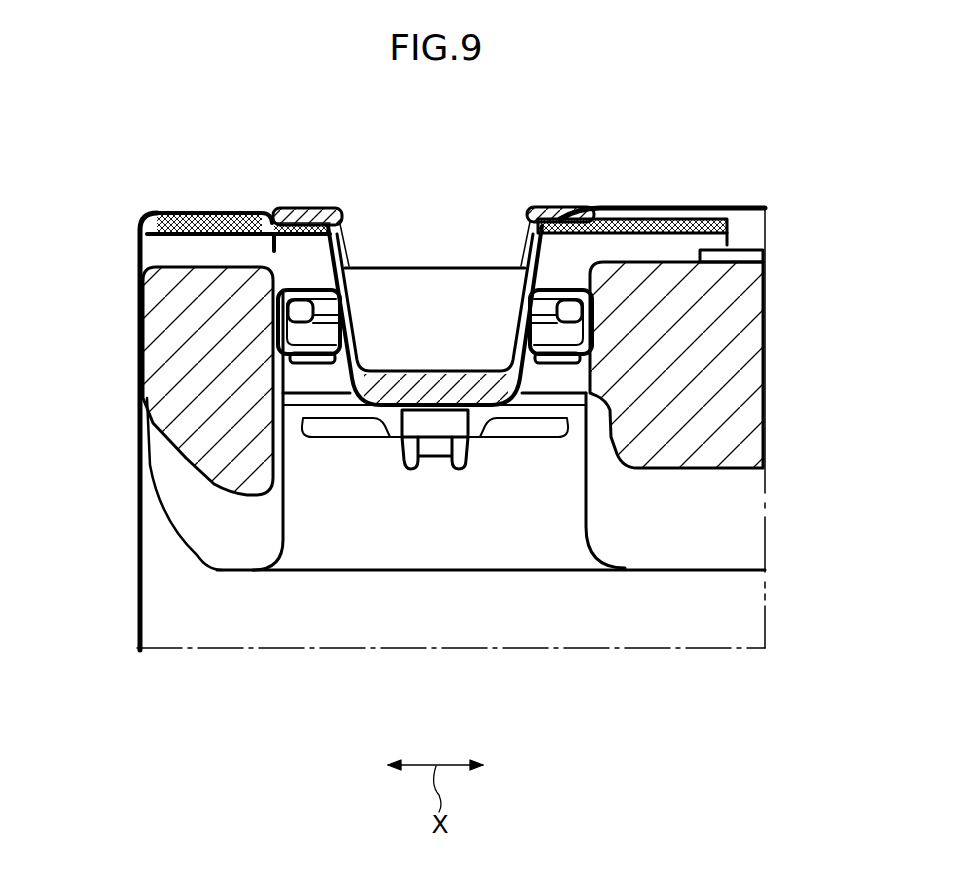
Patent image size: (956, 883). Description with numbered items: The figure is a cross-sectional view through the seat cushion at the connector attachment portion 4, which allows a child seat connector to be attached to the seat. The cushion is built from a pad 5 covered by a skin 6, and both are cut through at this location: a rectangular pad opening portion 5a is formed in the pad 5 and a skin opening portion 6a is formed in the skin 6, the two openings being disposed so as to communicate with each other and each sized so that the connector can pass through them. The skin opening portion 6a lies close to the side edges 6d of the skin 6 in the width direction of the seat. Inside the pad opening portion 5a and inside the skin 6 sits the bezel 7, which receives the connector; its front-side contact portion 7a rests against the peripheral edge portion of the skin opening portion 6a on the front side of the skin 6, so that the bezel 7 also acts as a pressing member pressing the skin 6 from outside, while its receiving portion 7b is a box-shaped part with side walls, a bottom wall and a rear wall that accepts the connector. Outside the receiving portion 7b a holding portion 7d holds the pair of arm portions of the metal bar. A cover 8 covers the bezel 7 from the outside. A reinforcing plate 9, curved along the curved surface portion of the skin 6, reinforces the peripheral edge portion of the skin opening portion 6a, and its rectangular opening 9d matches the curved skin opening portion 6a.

The connector attachment portion 4 is at (549, 148).
The pad 5 is at (752, 327).
The pad opening portion 5a is at (561, 366).
The skin 6 is at (727, 209).
The skin opening portion 6a is at (351, 209).
The side edges 6d is at (137, 243).
The bezel 7 is at (350, 251).
The front-side contact portion 7a is at (306, 207).
The receiving portion 7b is at (484, 400).
The holding portion 7d is at (331, 358).
The cover 8 is at (363, 430).
The reinforcing plate 9 is at (640, 218).
The opening 9d is at (344, 226).